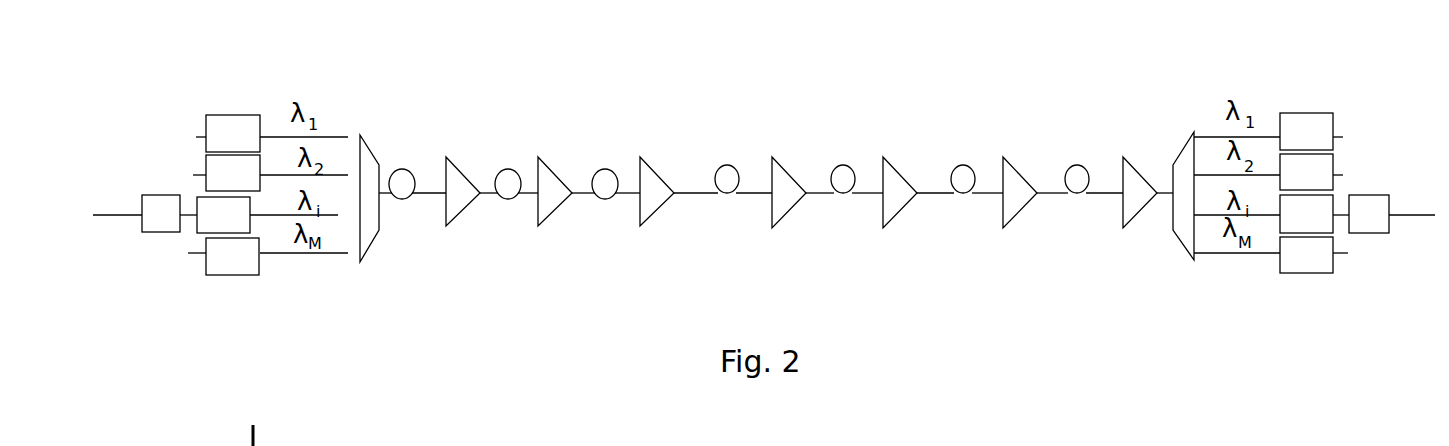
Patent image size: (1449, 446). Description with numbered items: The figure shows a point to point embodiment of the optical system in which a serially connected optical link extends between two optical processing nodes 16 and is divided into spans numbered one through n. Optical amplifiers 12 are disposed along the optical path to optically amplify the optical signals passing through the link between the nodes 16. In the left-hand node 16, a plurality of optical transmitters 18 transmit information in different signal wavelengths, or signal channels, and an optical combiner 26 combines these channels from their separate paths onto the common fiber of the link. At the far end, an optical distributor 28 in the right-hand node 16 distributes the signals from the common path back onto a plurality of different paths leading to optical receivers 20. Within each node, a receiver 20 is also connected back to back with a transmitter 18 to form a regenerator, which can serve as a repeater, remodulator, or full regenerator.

The optical amplifier 12 is at (765, 148).
The optical processing node 16 is at (395, 298).
The optical transmitter 18 is at (1412, 253).
The optical receiver 20 is at (158, 232).
The optical combiner 26 is at (372, 155).
The optical distributor 28 is at (1183, 152).